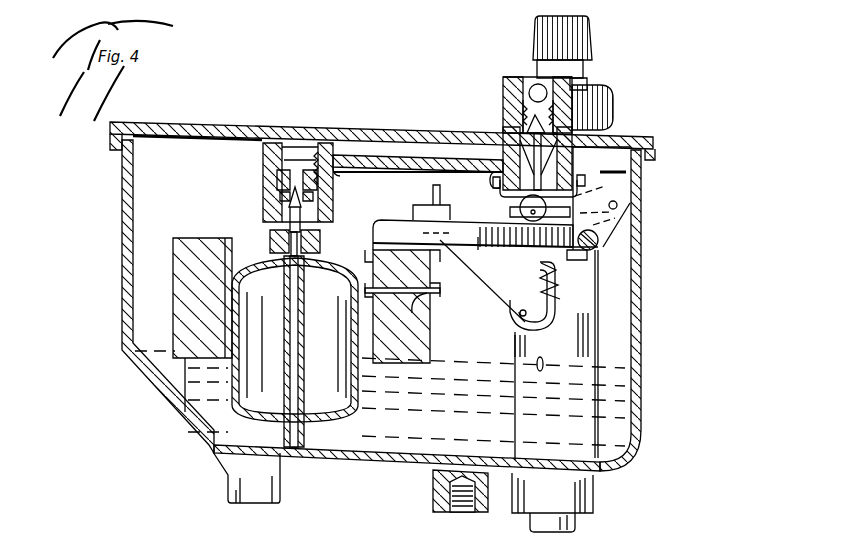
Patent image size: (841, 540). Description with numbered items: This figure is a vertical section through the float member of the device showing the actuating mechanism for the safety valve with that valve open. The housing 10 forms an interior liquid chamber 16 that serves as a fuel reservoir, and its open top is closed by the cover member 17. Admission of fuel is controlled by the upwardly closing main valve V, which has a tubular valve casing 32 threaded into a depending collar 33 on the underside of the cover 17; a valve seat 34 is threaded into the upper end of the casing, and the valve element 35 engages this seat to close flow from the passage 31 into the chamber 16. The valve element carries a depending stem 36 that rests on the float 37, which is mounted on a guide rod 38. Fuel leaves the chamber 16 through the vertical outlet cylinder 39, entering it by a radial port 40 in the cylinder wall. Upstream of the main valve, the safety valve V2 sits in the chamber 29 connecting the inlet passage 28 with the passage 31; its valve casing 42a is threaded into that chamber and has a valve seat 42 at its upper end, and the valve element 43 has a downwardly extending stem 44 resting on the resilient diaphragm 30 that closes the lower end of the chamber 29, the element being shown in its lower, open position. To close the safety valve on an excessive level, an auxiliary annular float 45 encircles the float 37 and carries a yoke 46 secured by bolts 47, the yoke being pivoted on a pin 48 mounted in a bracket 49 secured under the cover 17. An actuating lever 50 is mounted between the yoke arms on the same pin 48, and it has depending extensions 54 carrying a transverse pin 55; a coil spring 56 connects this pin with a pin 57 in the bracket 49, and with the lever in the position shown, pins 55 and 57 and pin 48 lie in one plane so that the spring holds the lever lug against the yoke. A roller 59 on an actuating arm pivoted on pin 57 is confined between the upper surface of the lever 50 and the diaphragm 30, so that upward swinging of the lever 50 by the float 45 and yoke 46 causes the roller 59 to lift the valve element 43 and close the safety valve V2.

The housing 10 is at (122, 238).
The liquid chamber 16 is at (625, 268).
The cover member 17 is at (192, 123).
The inlet passage 28 is at (528, 80).
The chamber 29 is at (598, 117).
The resilient diaphragm 30 is at (492, 182).
The passage 31 is at (378, 127).
The tubular valve casing 32 is at (272, 180).
The depending collar 33 is at (334, 187).
The valve seat 34 is at (303, 162).
The valve element 35 is at (270, 196).
The depending stem 36 is at (268, 235).
The float 37 is at (334, 373).
The guide rod 38 is at (298, 338).
The outlet cylinder 39 is at (592, 392).
The radial port 40 is at (542, 358).
The valve seat 42 is at (562, 47).
The valve casing 42a is at (520, 134).
The valve element 43 is at (521, 126).
The stem 44 is at (570, 160).
The auxiliary annular float 45 is at (190, 240).
The yoke 46 is at (473, 238).
The bolts 47 is at (430, 313).
The pivot pin 48 is at (604, 243).
The bracket 49 is at (622, 175).
The actuating lever 50 is at (529, 269).
The depending extensions 54 is at (492, 286).
The transverse pin 55 is at (513, 318).
The coil spring 56 is at (564, 310).
The pin 57 is at (629, 203).
The roller 59 is at (520, 205).
The main valve V is at (247, 211).
The safety valve V2 is at (511, 98).